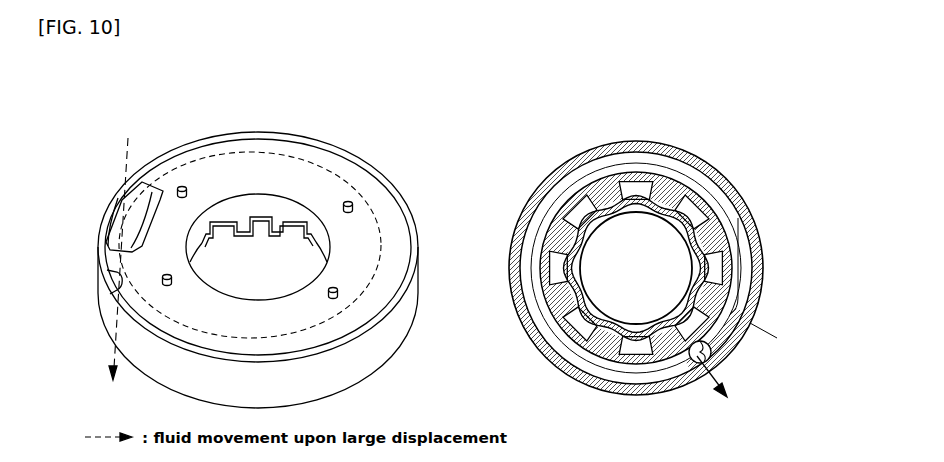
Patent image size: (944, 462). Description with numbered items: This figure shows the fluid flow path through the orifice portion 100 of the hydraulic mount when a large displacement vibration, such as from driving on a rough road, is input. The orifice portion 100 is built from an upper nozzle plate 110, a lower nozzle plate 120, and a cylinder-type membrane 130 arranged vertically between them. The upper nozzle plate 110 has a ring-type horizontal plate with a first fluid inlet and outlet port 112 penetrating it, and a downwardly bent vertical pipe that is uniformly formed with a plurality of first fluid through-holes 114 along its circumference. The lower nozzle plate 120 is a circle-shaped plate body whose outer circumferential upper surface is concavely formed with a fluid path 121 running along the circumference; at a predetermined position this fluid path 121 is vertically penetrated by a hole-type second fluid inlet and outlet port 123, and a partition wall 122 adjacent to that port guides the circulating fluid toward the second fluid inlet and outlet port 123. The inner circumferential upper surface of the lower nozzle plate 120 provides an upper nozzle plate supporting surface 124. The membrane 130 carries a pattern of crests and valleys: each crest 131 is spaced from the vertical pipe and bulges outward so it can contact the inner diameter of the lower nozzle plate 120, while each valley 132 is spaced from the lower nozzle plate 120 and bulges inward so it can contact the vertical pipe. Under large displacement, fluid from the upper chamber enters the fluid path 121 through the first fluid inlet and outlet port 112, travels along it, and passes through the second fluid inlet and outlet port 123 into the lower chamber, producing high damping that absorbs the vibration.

The orifice portion 100 is at (291, 126).
The upper nozzle plate 110 is at (328, 158).
The first fluid inlet and outlet port 112 is at (118, 197).
The first fluid through-holes 114 is at (262, 218).
The lower nozzle plate 120 is at (104, 297).
The fluid path 121 is at (742, 304).
The partition wall 122 is at (718, 338).
The second fluid inlet and outlet port 123 is at (712, 365).
The upper nozzle plate supporting surface 124 is at (720, 218).
The membrane 130 is at (550, 280).
The crest 131 is at (567, 337).
The valley 132 is at (567, 288).